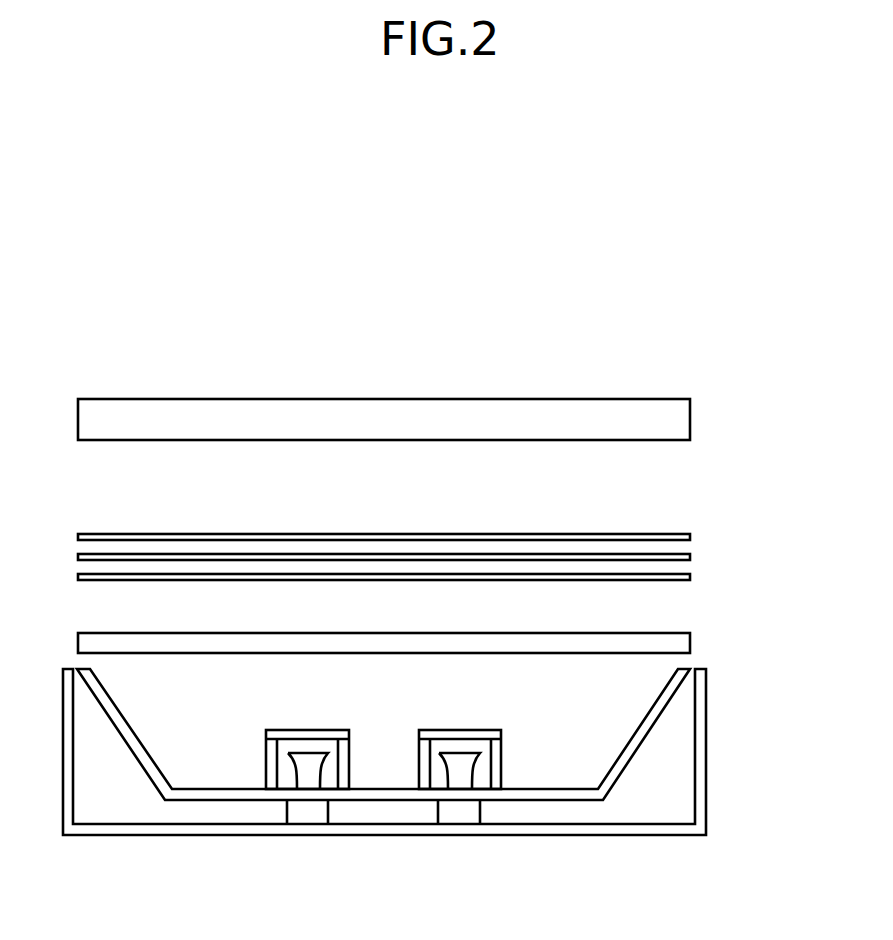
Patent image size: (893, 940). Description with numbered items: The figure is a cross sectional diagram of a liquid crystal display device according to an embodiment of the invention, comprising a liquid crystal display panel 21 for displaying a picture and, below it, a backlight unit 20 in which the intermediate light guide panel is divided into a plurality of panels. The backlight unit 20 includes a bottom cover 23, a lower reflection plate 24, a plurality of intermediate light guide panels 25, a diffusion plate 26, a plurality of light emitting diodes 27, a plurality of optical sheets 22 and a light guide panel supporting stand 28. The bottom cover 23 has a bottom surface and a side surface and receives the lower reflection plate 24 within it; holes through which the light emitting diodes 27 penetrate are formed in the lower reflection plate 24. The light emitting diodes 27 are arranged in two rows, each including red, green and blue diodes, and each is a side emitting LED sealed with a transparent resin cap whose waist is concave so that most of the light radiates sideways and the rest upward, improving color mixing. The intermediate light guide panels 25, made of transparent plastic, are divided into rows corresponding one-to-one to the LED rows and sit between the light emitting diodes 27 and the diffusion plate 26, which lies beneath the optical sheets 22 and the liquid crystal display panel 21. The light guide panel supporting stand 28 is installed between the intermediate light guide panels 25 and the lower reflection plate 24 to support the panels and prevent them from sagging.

The backlight unit 20 is at (456, 773).
The liquid crystal display panel 21 is at (673, 409).
The optical sheets 22 is at (702, 530).
The bottom cover 23 is at (700, 772).
The lower reflection plate 24 is at (657, 715).
The intermediate light guide panels 25 is at (443, 730).
The diffusion plate 26 is at (673, 646).
The light emitting diodes 27 is at (462, 782).
The light guide panel supporting stand 28 is at (495, 782).